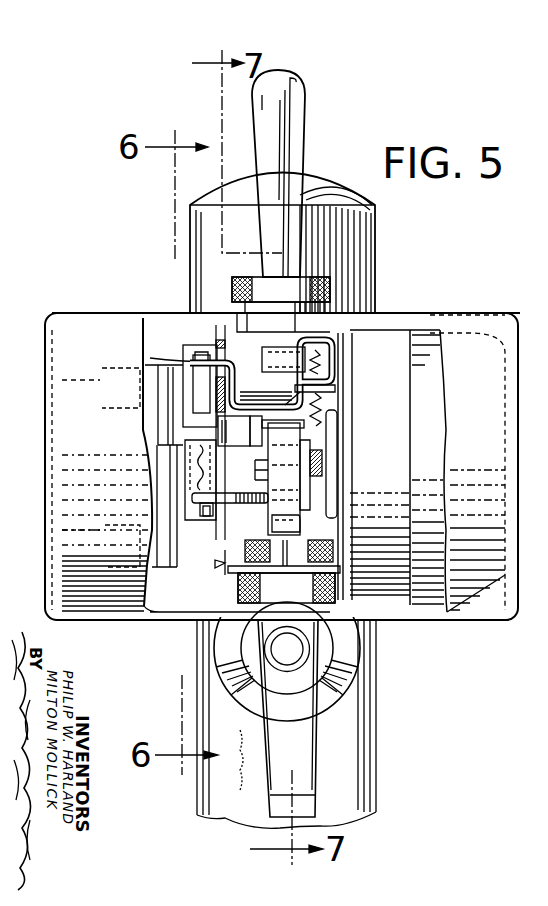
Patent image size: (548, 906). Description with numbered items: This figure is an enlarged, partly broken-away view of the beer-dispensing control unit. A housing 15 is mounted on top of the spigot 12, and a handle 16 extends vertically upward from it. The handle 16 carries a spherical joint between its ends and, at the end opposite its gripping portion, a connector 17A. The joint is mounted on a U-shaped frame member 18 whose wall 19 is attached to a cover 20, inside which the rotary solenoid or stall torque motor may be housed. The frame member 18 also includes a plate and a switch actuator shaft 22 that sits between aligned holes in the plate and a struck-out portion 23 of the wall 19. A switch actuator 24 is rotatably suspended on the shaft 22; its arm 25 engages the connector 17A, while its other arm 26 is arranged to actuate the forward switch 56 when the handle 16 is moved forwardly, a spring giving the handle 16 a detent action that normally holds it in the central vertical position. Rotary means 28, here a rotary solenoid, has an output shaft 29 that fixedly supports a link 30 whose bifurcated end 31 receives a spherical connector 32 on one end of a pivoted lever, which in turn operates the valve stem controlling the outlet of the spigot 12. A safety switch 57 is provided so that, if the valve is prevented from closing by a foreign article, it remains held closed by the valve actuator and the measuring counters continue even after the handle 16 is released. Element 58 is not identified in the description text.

The spigot 12 is at (278, 775).
The housing 15 is at (410, 313).
The handle 16 is at (292, 120).
The connector 17A is at (344, 391).
The U-shaped frame member 18 is at (361, 311).
The wall 19 is at (325, 397).
The cover 20 is at (428, 441).
The switch actuator shaft 22 is at (255, 393).
The struck-out portion 23 is at (312, 381).
The switch actuator 24 is at (262, 355).
The arm 25 is at (275, 350).
The arm 26 is at (150, 358).
The rotary means 28 is at (337, 454).
The output shaft 29 is at (322, 470).
The link 30 is at (261, 475).
The bifurcated end 31 is at (290, 528).
The spherical connector 32 is at (285, 545).
The switch S6 56 is at (220, 325).
The switch S7 57 is at (192, 498).
The nut 58 is at (208, 516).